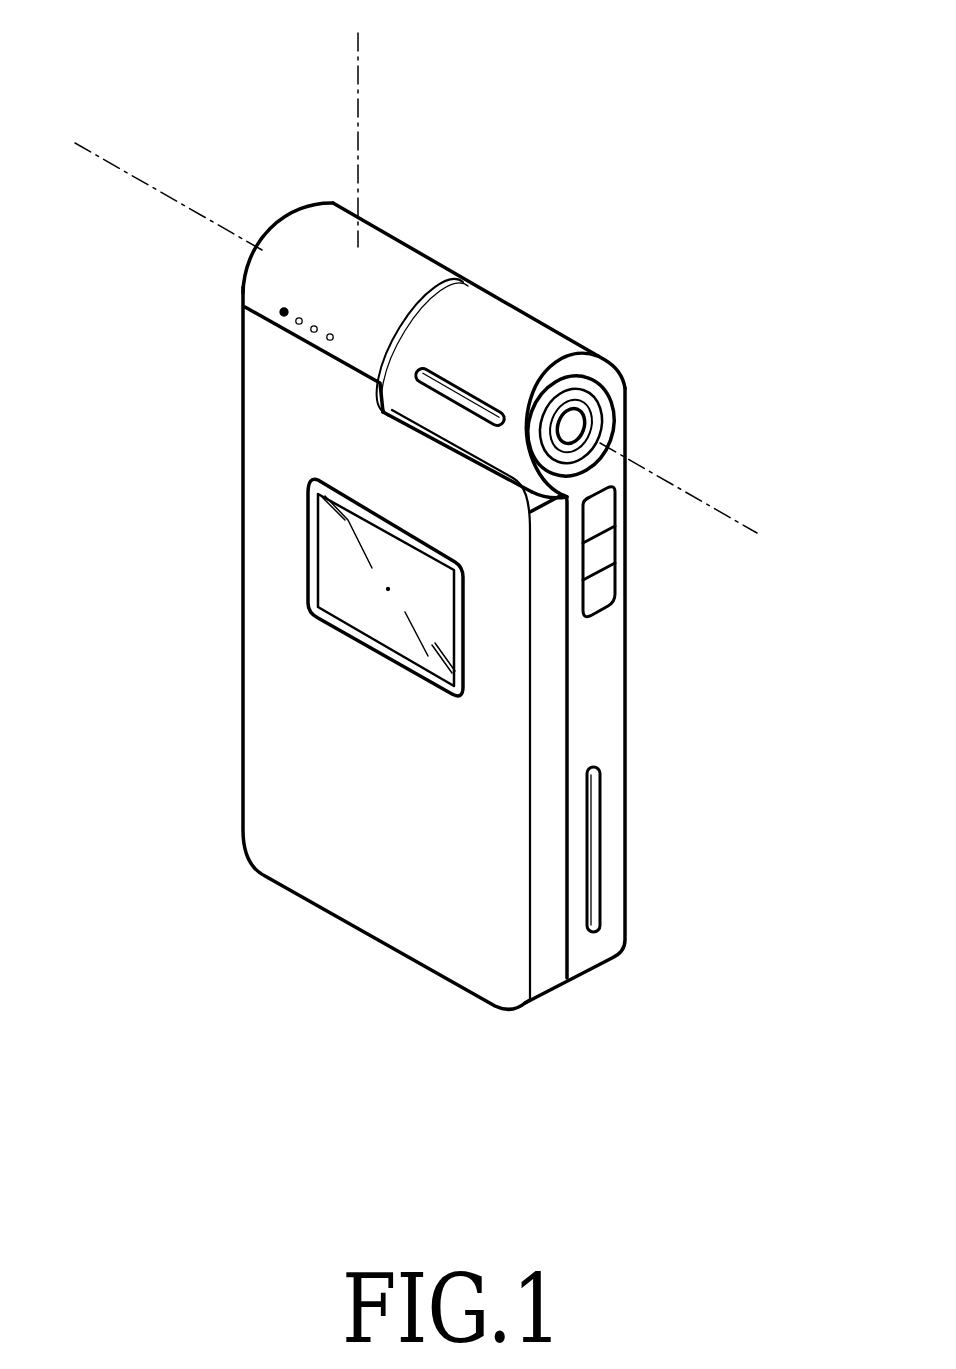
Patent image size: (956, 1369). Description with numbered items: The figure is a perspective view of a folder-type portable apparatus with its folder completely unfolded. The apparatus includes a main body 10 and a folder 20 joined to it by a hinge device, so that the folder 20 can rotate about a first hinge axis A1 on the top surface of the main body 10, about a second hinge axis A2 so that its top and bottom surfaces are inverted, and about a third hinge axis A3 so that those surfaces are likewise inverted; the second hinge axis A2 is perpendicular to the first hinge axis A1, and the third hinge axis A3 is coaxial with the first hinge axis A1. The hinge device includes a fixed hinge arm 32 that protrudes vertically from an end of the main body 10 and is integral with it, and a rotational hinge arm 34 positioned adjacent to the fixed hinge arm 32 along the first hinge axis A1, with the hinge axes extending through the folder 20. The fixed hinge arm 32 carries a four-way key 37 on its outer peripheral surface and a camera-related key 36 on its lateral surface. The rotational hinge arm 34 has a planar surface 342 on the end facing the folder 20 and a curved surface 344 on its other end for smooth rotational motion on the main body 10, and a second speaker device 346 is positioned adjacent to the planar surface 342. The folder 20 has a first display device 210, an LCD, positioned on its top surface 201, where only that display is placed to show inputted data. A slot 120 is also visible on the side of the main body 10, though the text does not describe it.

The main body 10 is at (645, 695).
The slot on side of main body 120 is at (600, 855).
The folder 20 is at (300, 648).
The top surface 201 is at (272, 758).
The first display device 210 is at (333, 551).
The fixed hinge arm 32 is at (571, 350).
The rotational hinge arm 34 is at (355, 266).
The planar surface 342 is at (300, 340).
The curved surface 344 is at (388, 237).
The second speaker device 346 is at (282, 310).
The key 36 is at (590, 423).
The key 37 is at (458, 400).
The first hinge axis A1 is at (733, 515).
The second hinge axis A2 is at (358, 62).
The third hinge axis A3 is at (112, 157).